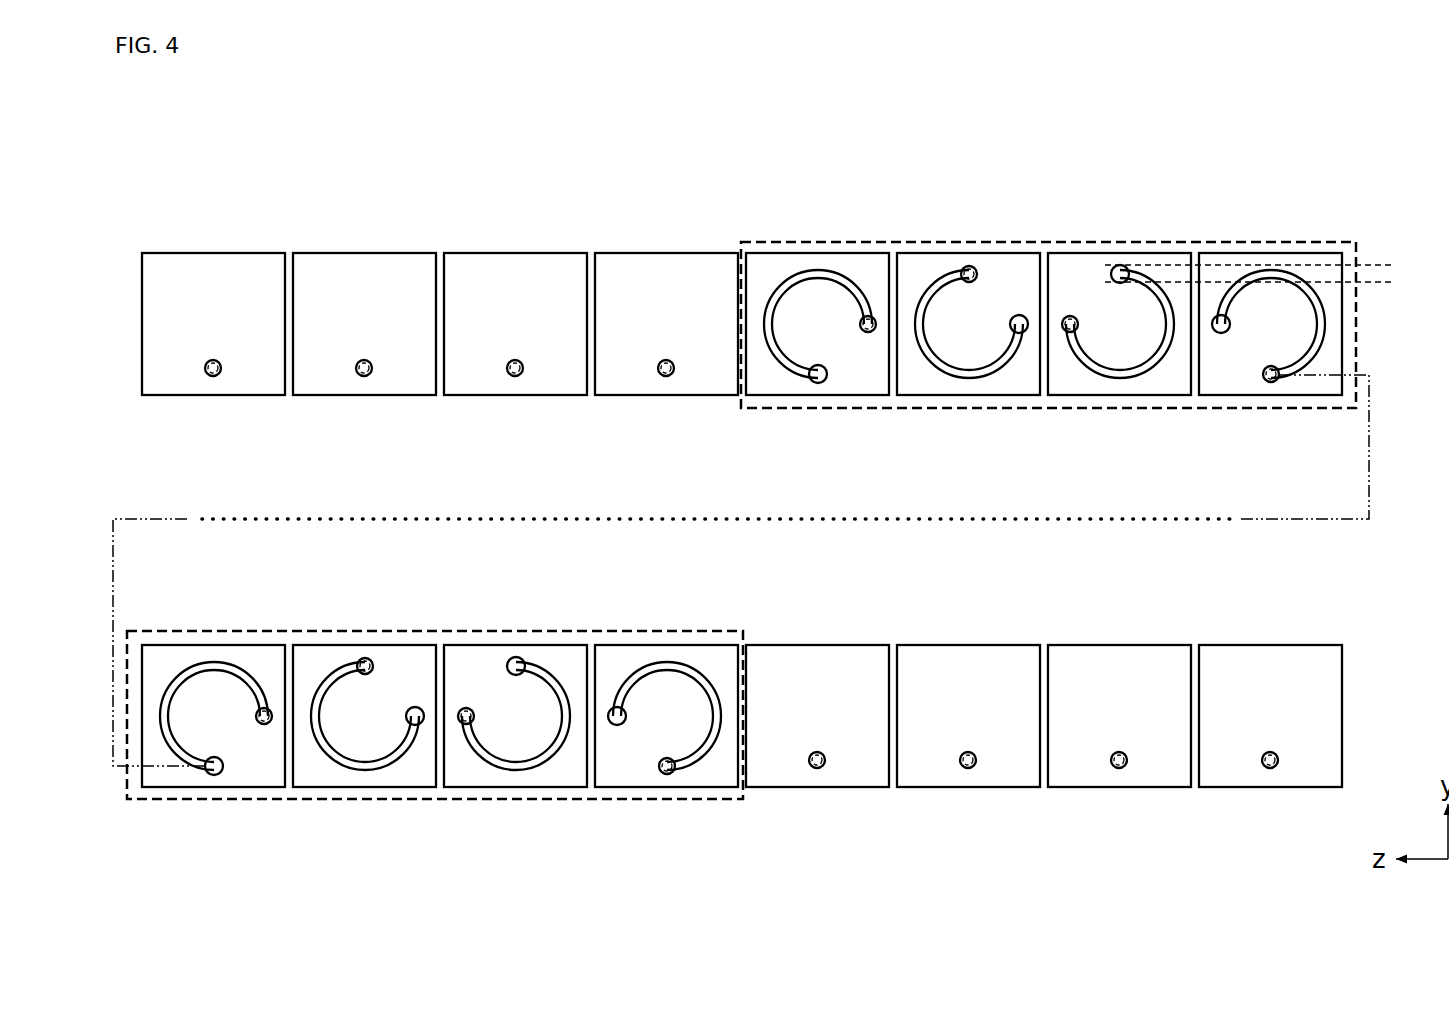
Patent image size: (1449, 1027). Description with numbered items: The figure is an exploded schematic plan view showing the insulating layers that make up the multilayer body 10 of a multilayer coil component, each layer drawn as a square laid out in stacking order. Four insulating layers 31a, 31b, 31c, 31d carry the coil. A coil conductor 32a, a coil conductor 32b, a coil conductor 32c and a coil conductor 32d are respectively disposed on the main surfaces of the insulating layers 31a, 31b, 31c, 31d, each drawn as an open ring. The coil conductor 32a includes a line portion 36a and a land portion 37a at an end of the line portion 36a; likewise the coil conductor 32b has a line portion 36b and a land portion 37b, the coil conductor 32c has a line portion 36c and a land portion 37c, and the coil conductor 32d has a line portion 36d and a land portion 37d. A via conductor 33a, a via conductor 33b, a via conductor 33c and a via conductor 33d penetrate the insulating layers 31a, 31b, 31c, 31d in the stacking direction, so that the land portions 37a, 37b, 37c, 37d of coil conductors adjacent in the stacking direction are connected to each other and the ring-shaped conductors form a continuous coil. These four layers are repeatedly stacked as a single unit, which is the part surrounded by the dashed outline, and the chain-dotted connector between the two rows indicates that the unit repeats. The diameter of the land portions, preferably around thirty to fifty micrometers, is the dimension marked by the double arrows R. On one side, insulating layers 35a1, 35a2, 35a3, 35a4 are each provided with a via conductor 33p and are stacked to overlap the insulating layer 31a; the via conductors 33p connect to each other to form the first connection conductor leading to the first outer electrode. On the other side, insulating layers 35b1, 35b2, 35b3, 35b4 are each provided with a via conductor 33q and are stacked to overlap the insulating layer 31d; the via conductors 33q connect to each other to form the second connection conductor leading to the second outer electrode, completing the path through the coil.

The multilayer body 10 is at (272, 175).
The diameter of the land portions R is at (1390, 243).
The insulating layer 31a is at (780, 262).
The insulating layer 31b is at (930, 262).
The insulating layer 31c is at (1081, 262).
The insulating layer 31d is at (1232, 262).
The coil conductor 32a is at (811, 264).
The coil conductor 32b is at (973, 382).
The coil conductor 32c is at (1122, 382).
The coil conductor 32d is at (1264, 267).
The via conductor 33a is at (868, 315).
The via conductor 33b is at (968, 265).
The via conductor 33c is at (1068, 333).
The via conductor 33d is at (1279, 384).
The via conductors 33p is at (212, 378).
The via conductors 33q is at (1037, 800).
The insulating layer 35a1 is at (183, 265).
The insulating layer 35a2 is at (334, 265).
The insulating layer 35a3 is at (485, 265).
The insulating layer 35a4 is at (636, 265).
The insulating layer 35b1 is at (1268, 686).
The insulating layer 35b2 is at (1117, 686).
The insulating layer 35b3 is at (966, 686).
The insulating layer 35b4 is at (815, 686).
The line portion 36a is at (792, 368).
The line portion 36b is at (947, 370).
The line portion 36c is at (1152, 373).
The line portion 36d is at (1299, 282).
The land portion 37a is at (868, 333).
The land portion 37b is at (1019, 314).
The land portion 37c is at (1124, 265).
The land portion 37d is at (1221, 333).